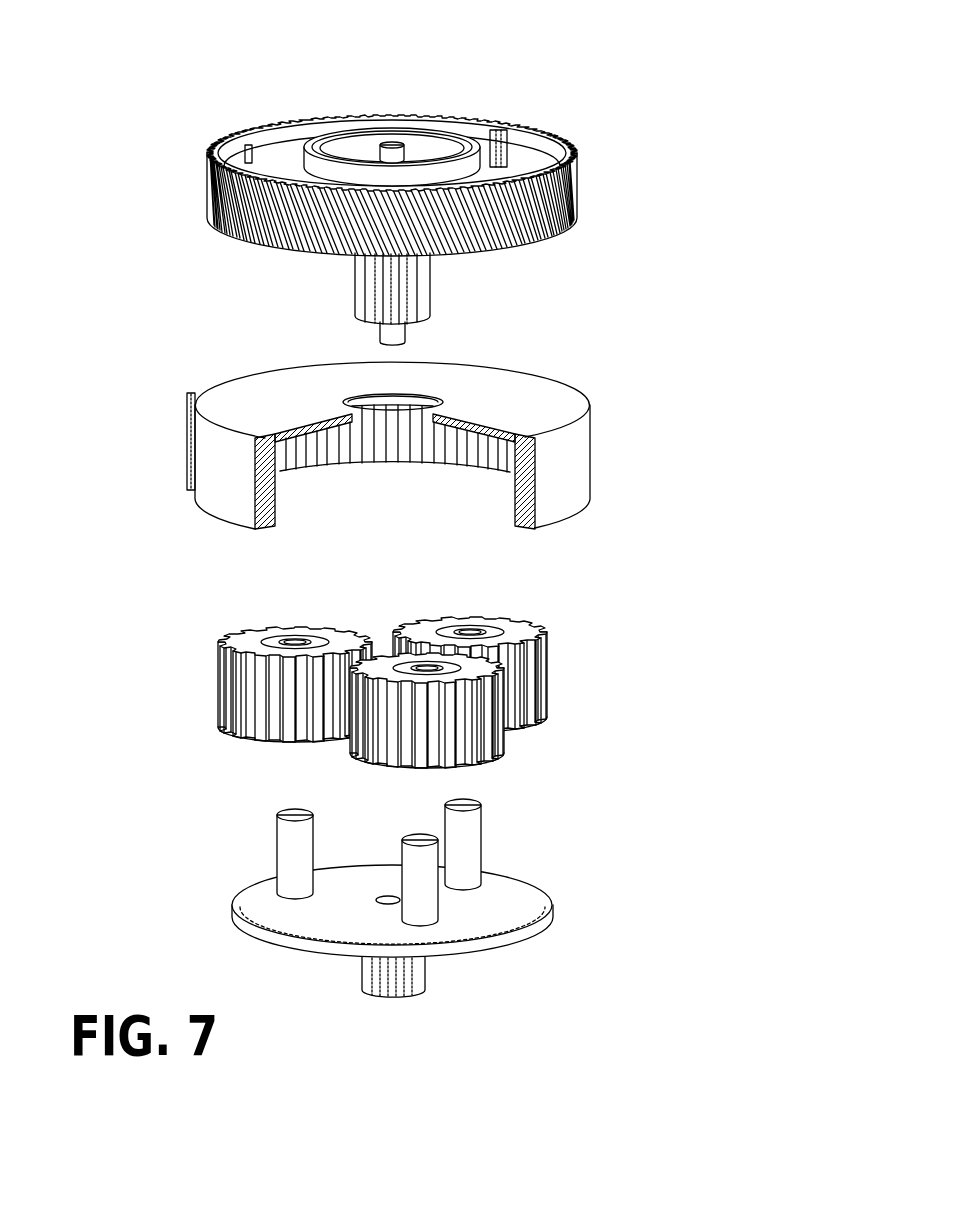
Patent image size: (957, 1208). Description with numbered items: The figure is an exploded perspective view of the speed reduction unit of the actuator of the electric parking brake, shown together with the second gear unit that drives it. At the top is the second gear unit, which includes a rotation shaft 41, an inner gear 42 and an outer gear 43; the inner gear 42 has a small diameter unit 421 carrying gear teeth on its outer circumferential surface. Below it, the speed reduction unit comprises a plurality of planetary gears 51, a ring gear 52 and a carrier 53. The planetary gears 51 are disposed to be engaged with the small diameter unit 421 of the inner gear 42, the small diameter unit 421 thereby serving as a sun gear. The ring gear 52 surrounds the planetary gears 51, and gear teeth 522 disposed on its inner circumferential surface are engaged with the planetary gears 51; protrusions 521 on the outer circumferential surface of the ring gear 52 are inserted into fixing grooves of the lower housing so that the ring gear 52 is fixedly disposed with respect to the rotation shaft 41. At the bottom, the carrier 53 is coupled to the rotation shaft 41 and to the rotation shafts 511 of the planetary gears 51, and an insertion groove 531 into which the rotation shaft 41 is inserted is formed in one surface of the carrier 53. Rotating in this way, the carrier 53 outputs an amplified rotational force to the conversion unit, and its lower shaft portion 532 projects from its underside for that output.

The rotation shaft 41 is at (392, 147).
The inner gear 42 is at (425, 140).
The outer gear 43 is at (558, 137).
The small diameter unit 421 is at (425, 292).
The ring gear 52 is at (336, 431).
The protrusions 521 is at (193, 397).
The gear teeth 522 is at (318, 460).
The planetary gears 51 is at (235, 682).
The carrier 53 is at (403, 908).
The rotation shafts 511 is at (285, 837).
The insertion groove 531 is at (390, 896).
The carrier shaft 532 is at (420, 992).